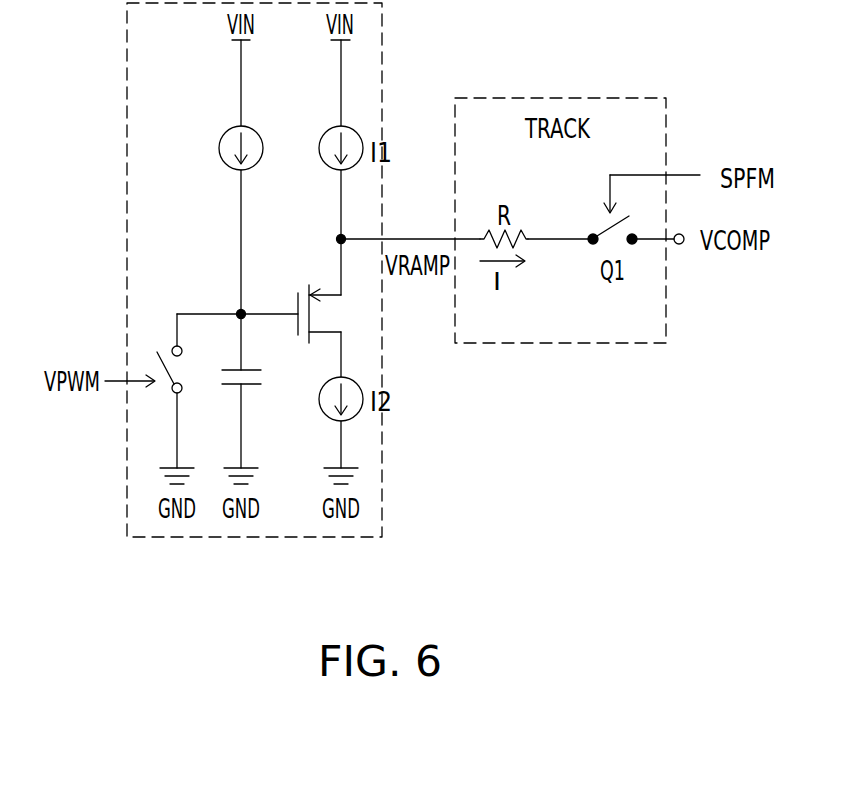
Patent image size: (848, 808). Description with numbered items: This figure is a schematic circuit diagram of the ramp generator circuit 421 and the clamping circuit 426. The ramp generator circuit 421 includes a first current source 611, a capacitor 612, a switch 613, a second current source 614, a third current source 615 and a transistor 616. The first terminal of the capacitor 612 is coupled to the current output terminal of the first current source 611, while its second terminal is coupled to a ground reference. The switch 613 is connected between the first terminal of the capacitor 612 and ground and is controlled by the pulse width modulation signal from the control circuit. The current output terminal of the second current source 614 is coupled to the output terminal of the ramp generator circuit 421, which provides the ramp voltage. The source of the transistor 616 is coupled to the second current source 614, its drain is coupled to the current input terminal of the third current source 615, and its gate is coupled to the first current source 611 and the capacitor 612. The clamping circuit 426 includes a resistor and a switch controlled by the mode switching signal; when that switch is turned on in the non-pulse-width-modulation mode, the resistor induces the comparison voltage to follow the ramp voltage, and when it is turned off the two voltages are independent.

The first current source 611 is at (219, 146).
The capacitor 612 is at (222, 380).
The switch 613 is at (163, 393).
The second current source 614 is at (319, 152).
The third current source 615 is at (321, 408).
The transistor 616 is at (306, 287).
The ramp generator circuit 421 is at (382, 458).
The clamping circuit 426 is at (572, 343).